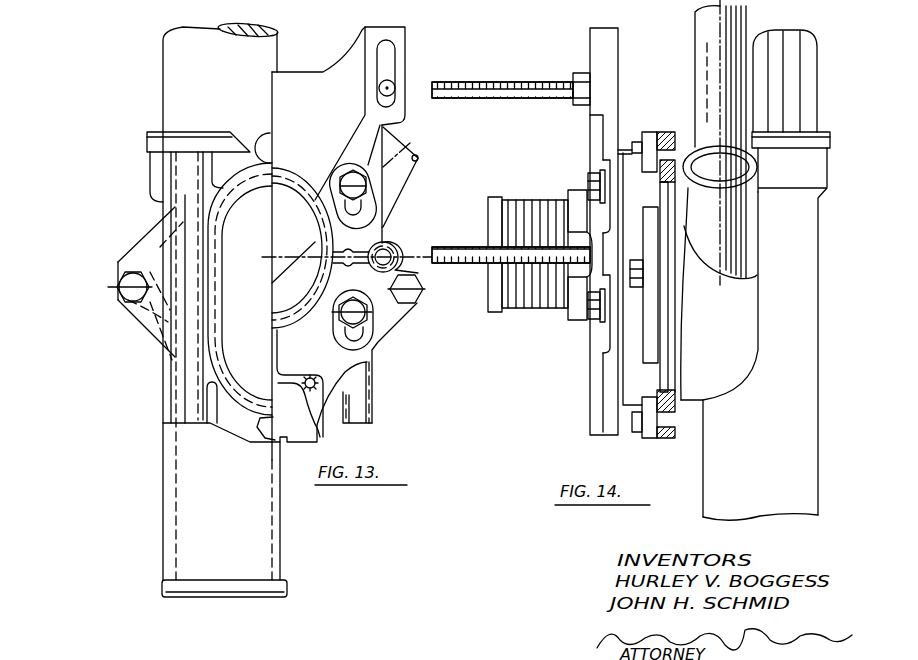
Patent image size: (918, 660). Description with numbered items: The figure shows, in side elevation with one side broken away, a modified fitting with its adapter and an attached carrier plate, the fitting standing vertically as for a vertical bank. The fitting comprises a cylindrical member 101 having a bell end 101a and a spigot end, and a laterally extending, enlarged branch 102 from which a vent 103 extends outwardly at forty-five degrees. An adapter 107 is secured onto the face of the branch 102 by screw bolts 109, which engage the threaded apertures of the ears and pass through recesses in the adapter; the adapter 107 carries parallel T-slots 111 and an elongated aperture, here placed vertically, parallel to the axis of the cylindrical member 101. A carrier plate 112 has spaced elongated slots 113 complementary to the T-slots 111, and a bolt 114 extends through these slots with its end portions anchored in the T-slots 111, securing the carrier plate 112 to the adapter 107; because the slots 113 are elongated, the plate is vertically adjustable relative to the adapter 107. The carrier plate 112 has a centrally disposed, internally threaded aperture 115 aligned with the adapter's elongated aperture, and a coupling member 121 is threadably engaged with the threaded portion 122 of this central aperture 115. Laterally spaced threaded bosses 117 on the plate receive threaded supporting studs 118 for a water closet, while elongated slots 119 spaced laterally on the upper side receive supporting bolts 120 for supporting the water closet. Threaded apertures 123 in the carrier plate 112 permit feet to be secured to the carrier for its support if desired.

In FIG. 13, the cylindrical member 101 is at (172, 493).
In FIG. 14, the cylindrical member 101 is at (707, 498).
In FIG. 13, the bell end 101a is at (150, 168).
In FIG. 14, the bell end 101a is at (783, 137).
In FIG. 14, the branch 102 is at (700, 388).
In FIG. 13, the vent 103 is at (398, 200).
In FIG. 14, the vent 103 is at (759, 224).
In FIG. 13, the adapter 107 is at (147, 343).
In FIG. 14, the adapter 107 is at (647, 130).
In FIG. 13, the screw bolts 109 is at (125, 298).
In FIG. 14, the screw bolts 109 is at (636, 437).
In FIG. 13, the T-slots 111 is at (360, 403).
In FIG. 13, the carrier plate 112 is at (325, 72).
In FIG. 14, the carrier plate 112 is at (619, 48).
In FIG. 13, the elongated slots 113 is at (360, 210).
In FIG. 13, the bolt 114 is at (366, 186).
In FIG. 14, the bolt 114 is at (589, 177).
In FIG. 13, the internally threaded aperture 115 is at (280, 213).
In FIG. 13, the threaded bosses 117 is at (394, 251).
In FIG. 14, the threaded bosses 117 is at (580, 280).
In FIG. 14, the supporting studs 118 is at (480, 264).
In FIG. 13, the elongated slots 119 is at (391, 55).
In FIG. 13, the supporting bolts 120 is at (392, 83).
In FIG. 14, the supporting bolts 120 is at (481, 82).
In FIG. 14, the coupling member 121 is at (513, 312).
In FIG. 13, the threaded portion 122 is at (317, 220).
In FIG. 13, the threaded apertures 123 is at (320, 380).